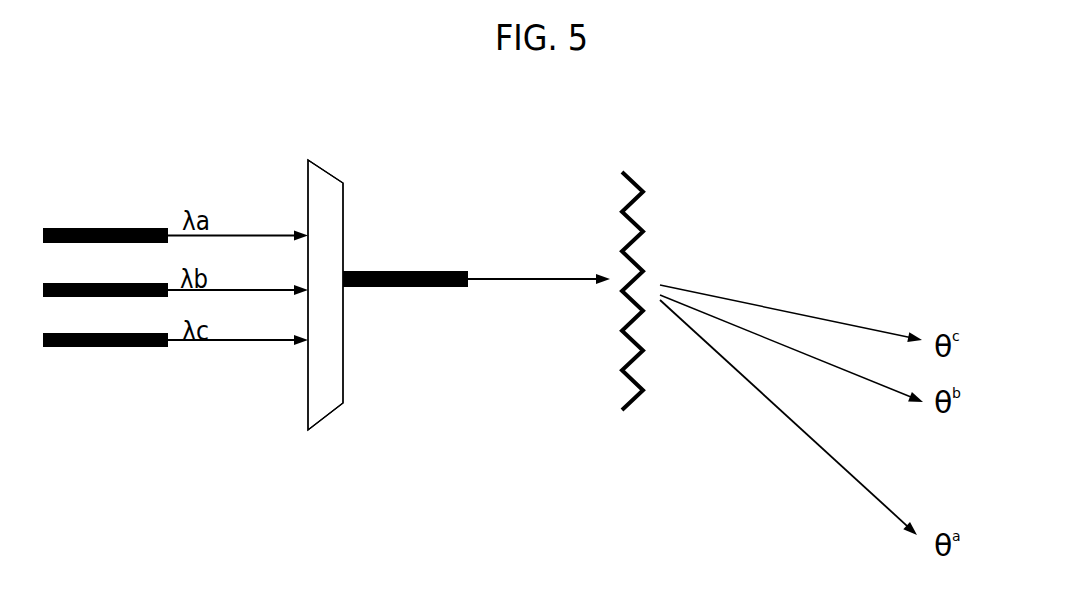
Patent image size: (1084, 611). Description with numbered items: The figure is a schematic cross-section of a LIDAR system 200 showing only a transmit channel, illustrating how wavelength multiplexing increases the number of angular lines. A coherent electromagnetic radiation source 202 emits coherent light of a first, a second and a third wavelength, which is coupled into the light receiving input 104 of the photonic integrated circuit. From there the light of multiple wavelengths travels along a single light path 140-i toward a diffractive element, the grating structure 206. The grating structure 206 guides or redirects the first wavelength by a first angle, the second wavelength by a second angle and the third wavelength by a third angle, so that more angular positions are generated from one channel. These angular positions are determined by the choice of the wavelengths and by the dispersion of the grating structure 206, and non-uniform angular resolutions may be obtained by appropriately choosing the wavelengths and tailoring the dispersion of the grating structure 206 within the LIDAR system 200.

The LIDAR system 200 is at (768, 162).
The coherent electromagnetic radiation source 202 is at (285, 288).
The light receiving input 104 is at (360, 297).
The light path 140-i is at (476, 239).
The grating structure 206 is at (624, 262).